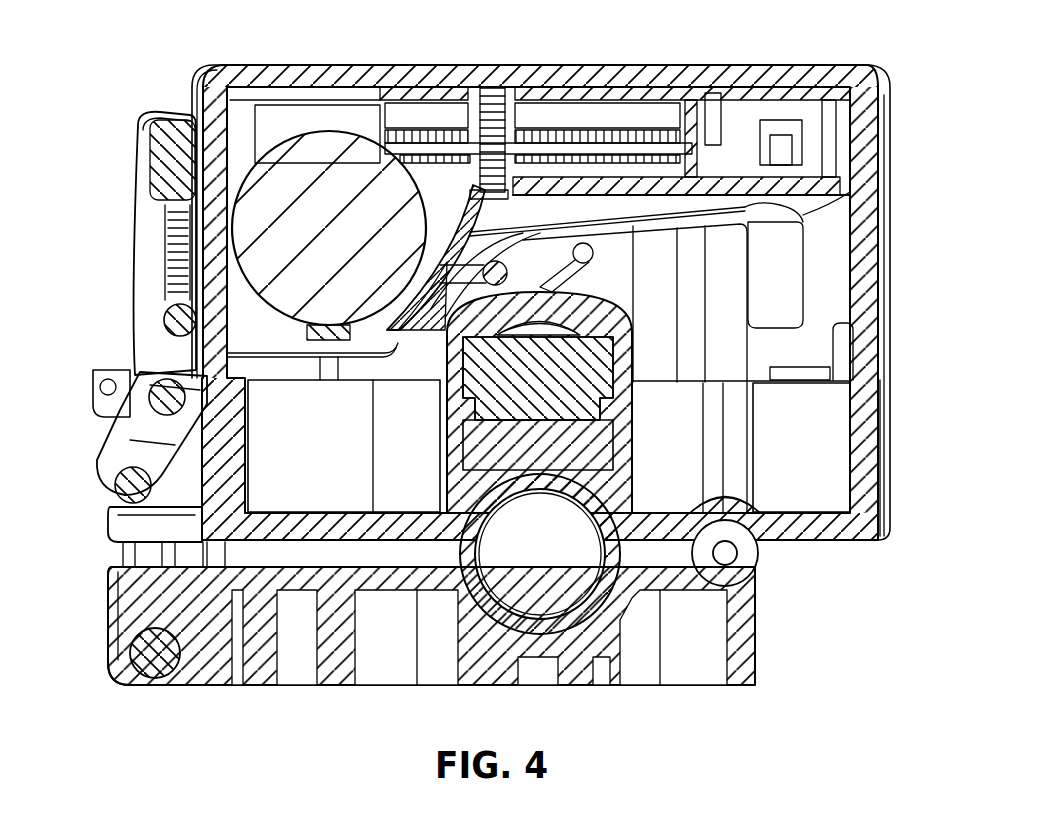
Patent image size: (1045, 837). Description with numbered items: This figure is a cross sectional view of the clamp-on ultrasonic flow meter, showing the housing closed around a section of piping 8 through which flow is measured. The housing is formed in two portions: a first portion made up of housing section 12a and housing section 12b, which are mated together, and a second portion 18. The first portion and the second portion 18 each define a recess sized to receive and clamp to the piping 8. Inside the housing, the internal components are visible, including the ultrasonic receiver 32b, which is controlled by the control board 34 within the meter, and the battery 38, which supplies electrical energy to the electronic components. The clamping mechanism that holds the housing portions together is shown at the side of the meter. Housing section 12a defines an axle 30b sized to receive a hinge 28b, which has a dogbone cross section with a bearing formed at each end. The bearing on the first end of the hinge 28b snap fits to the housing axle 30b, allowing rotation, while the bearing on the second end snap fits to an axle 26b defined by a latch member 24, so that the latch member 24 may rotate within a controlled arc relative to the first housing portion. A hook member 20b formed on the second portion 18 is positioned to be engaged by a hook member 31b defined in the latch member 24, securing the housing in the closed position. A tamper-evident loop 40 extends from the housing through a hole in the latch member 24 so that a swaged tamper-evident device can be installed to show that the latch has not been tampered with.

The piping 8 is at (490, 600).
The housing section 12a is at (892, 232).
The housing section 12b is at (895, 440).
The second portion 18 is at (745, 685).
The hook member 20b is at (105, 600).
The latch member 24 is at (178, 287).
The axle 26b is at (165, 372).
The hinge 28b is at (105, 470).
The axle 30b is at (115, 507).
The hook member 31b is at (150, 668).
The receiver 32b is at (598, 343).
The control board 34 is at (816, 90).
The battery 38 is at (342, 143).
The loop 40 is at (90, 388).